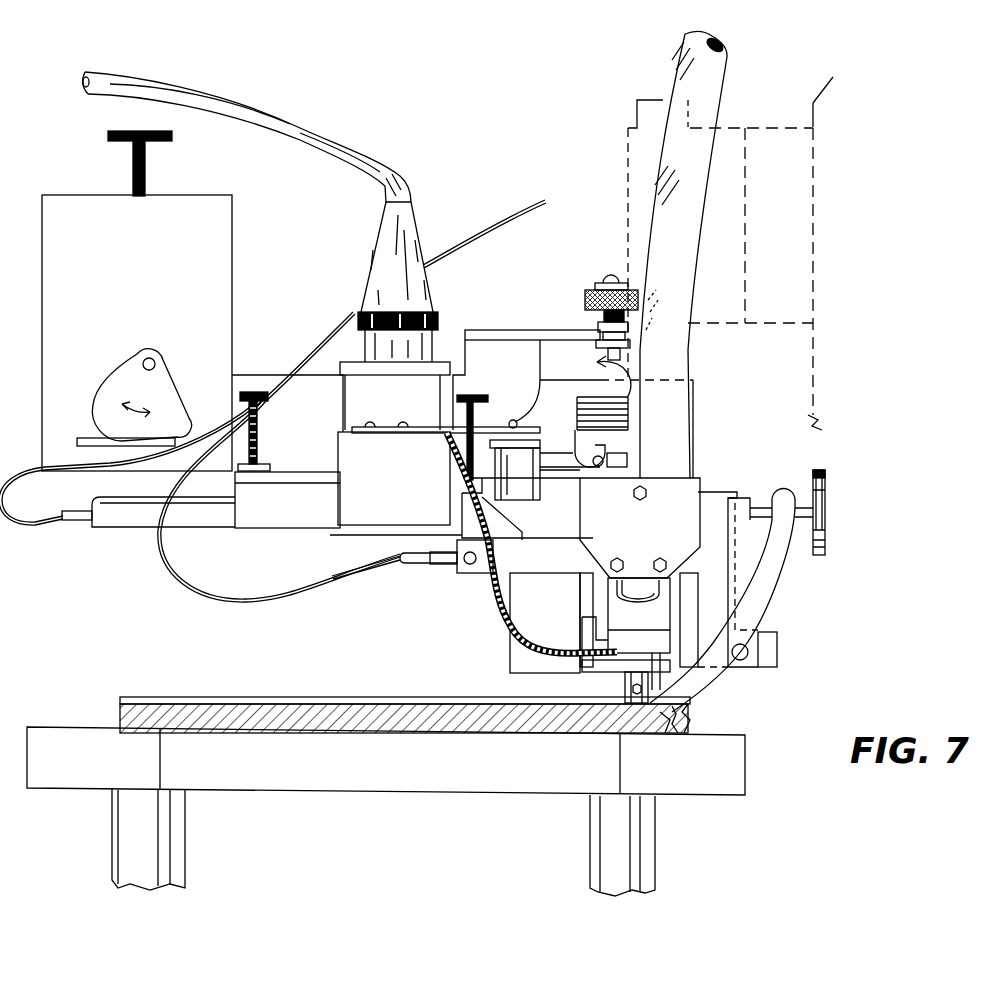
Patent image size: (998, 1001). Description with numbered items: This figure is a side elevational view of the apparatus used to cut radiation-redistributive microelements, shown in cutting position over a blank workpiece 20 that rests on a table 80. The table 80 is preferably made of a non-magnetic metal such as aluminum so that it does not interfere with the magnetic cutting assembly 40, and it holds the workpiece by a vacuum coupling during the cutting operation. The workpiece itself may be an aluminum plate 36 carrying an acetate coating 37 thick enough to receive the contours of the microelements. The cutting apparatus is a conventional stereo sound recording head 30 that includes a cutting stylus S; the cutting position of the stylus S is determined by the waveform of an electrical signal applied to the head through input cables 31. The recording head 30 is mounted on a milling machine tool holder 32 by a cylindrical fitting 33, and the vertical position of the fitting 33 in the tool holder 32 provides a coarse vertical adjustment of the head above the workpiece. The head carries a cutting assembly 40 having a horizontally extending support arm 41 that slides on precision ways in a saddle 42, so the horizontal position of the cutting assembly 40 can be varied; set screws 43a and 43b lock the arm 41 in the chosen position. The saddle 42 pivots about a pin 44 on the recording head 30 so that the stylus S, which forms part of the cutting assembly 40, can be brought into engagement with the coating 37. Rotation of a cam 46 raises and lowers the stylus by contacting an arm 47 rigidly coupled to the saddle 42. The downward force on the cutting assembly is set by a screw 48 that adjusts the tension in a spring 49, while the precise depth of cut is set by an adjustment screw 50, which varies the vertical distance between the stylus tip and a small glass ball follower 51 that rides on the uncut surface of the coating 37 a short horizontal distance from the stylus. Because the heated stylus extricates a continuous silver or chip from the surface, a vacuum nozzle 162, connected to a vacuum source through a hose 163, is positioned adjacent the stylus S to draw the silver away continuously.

The blank workpiece 20 is at (98, 710).
The stereo sound recording head 30 is at (518, 308).
The input cables 31 is at (332, 124).
The milling machine tool holder 32 is at (790, 224).
The cylindrical fitting 33 is at (636, 110).
The aluminum plate 36 is at (692, 714).
The acetate coating 37 is at (682, 706).
The cutting assembly 40 is at (471, 604).
The support arm 41 is at (207, 518).
The saddle 42 is at (299, 527).
The set screw 43a is at (262, 428).
The set screw 43b is at (486, 398).
The pin 44 is at (407, 506).
The cam 46 is at (170, 363).
The arm 47 is at (79, 437).
The screw 48 is at (584, 298).
The spring 49 is at (576, 404).
The adjustment screw 50 is at (827, 480).
The glass ball follower 51 is at (655, 708).
The table 80 is at (403, 772).
The vacuum nozzle 162 is at (618, 679).
The hose 163 is at (712, 76).
The cutting stylus S is at (616, 698).